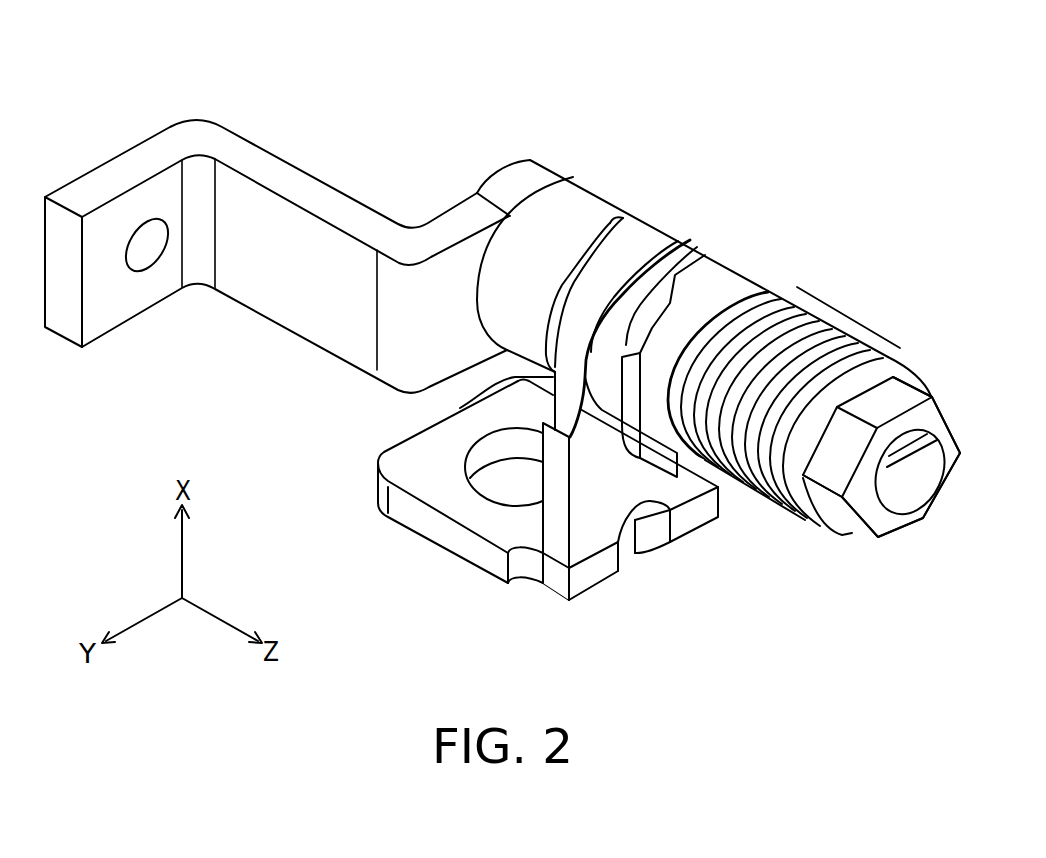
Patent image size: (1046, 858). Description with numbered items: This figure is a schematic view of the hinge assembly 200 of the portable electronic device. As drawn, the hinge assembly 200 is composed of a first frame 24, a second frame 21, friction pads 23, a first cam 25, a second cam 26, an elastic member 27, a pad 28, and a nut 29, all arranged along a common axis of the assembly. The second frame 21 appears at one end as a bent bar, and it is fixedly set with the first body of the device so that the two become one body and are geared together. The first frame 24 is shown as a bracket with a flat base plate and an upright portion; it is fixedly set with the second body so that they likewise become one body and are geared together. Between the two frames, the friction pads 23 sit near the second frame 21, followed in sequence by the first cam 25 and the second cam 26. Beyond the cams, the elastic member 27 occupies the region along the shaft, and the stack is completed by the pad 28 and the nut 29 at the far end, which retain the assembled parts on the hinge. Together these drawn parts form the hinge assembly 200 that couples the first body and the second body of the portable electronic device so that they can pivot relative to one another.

The hinge assembly 200 is at (447, 121).
The second frame 21 is at (110, 160).
The friction pads 23 is at (618, 221).
The first frame 24 is at (437, 502).
The first cam 25 is at (705, 257).
The second cam 26 is at (760, 286).
The elastic member 27 is at (851, 316).
The pad 28 is at (800, 507).
The nut 29 is at (850, 533).